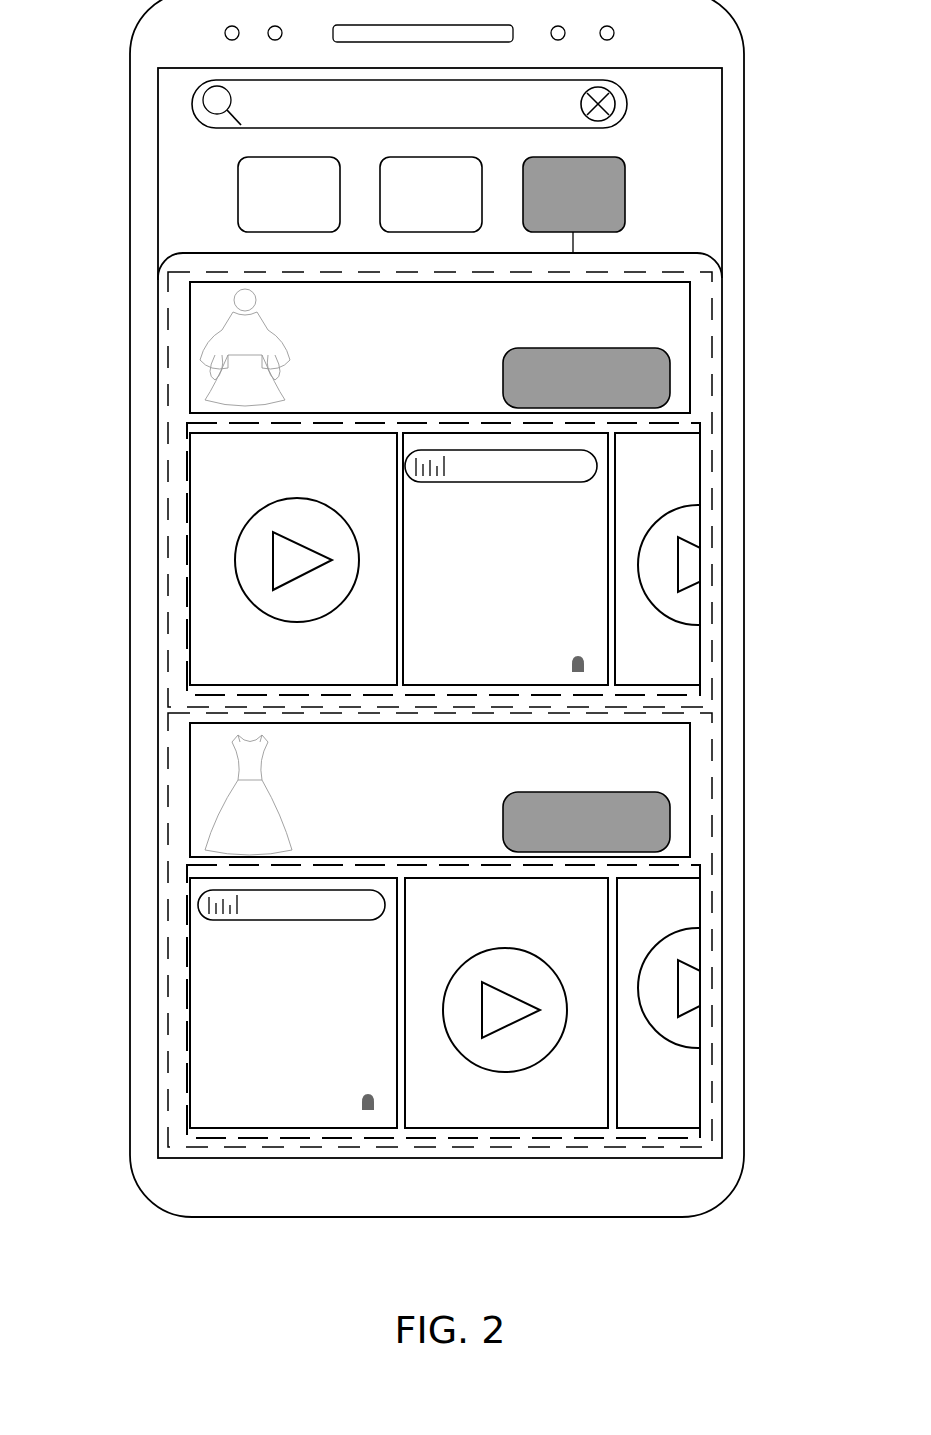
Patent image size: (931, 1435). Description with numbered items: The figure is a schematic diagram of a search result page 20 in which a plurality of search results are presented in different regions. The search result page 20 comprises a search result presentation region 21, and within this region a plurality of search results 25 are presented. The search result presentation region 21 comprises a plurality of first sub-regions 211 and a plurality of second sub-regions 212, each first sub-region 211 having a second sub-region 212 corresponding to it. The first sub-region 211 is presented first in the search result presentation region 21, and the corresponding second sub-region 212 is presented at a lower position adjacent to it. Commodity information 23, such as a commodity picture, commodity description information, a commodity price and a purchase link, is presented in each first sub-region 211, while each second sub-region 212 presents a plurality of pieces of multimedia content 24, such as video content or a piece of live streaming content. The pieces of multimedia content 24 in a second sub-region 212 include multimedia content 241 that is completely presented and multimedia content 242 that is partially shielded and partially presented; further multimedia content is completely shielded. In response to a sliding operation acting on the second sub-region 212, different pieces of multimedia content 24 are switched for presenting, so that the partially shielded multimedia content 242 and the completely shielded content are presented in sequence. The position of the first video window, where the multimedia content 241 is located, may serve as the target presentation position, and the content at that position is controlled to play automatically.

The search result page 20 is at (703, 108).
The search result presentation region 21 is at (692, 250).
The commodity information 23 is at (637, 337).
The first sub-region 211 is at (187, 347).
The search result 25 is at (167, 487).
The second sub-region 212 is at (187, 558).
The multimedia content 24 is at (295, 1128).
The completely presented multimedia content 241 is at (240, 1128).
The partially shielded multimedia content 242 is at (703, 565).